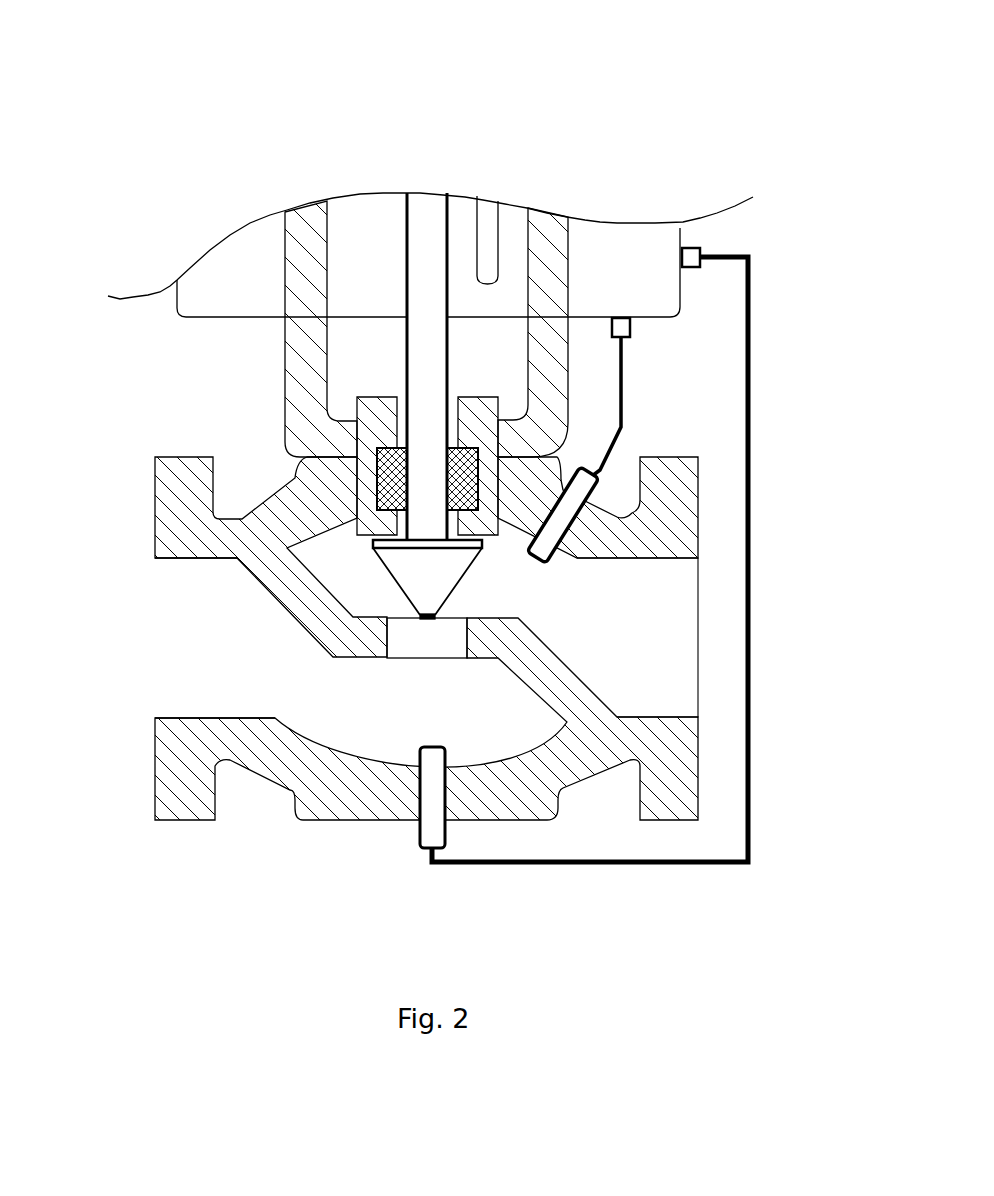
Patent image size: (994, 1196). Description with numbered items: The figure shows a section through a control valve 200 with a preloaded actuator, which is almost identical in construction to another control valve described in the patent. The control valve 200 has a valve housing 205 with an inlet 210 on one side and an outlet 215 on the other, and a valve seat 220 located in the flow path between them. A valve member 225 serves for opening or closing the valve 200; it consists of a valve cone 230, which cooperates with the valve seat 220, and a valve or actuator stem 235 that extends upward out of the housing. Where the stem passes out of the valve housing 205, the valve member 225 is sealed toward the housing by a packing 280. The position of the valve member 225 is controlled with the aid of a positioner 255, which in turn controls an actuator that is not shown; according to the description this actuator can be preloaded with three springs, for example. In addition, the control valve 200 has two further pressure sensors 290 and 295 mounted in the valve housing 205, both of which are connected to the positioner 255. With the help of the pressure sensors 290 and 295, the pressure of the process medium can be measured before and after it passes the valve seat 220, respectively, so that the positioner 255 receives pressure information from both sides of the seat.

The control valve 200 is at (632, 68).
The valve housing 205 is at (668, 488).
The inlet 210 is at (220, 622).
The outlet 215 is at (668, 630).
The valve seat 220 is at (488, 645).
The valve member 225 is at (428, 415).
The valve cone 230 is at (425, 583).
The valve or actuator stem 235 is at (430, 290).
The positioner 255 is at (645, 248).
The packing 280 is at (377, 471).
The pressure sensor 290 is at (432, 812).
The pressure sensor 295 is at (565, 527).